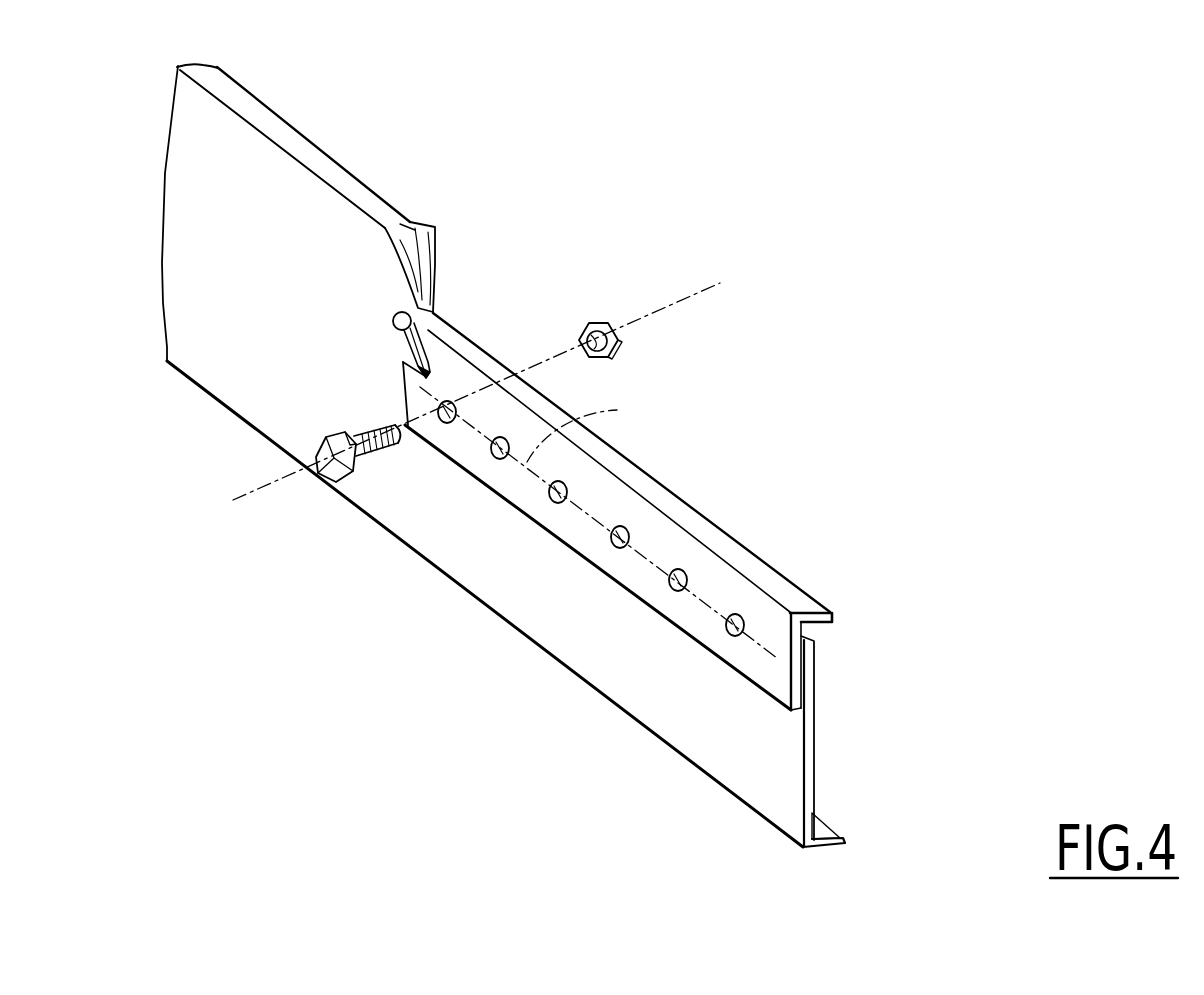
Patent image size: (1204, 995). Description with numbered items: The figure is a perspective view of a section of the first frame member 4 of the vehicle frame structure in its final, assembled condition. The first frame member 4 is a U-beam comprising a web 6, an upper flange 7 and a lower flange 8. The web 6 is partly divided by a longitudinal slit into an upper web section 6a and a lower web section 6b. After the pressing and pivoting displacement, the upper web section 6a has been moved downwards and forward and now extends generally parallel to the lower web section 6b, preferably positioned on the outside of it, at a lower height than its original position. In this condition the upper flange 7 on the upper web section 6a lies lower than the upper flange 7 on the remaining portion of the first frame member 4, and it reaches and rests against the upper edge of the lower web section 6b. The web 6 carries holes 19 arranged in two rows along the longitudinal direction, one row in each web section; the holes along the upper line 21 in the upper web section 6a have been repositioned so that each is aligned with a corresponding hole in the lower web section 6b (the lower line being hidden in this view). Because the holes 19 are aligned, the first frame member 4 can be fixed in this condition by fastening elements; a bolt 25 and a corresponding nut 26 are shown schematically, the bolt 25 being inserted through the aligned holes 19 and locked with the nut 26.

The first frame member 4 is at (677, 748).
The web 6 is at (468, 568).
The upper web section 6a is at (787, 690).
The lower web section 6b is at (775, 746).
The upper flange 7 is at (374, 198).
The lower flange 8 is at (823, 829).
The holes 19 is at (612, 547).
The upper line 21 is at (617, 410).
The bolt 25 is at (340, 478).
The nut 26 is at (592, 323).